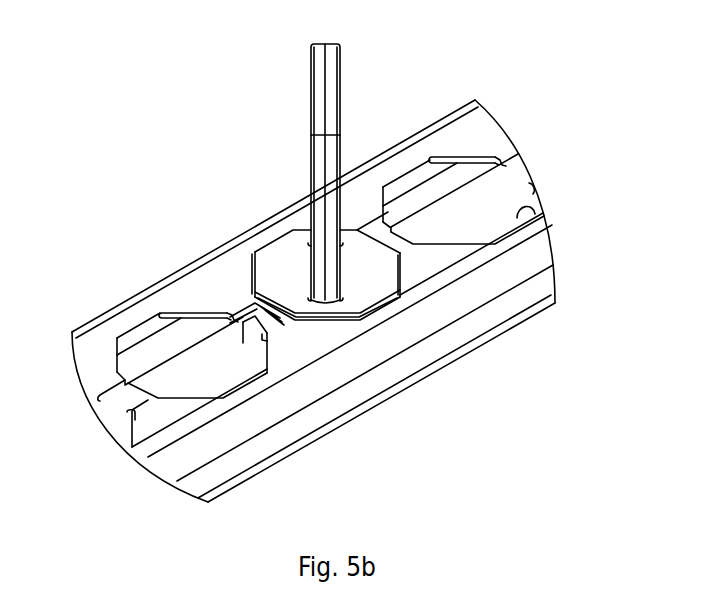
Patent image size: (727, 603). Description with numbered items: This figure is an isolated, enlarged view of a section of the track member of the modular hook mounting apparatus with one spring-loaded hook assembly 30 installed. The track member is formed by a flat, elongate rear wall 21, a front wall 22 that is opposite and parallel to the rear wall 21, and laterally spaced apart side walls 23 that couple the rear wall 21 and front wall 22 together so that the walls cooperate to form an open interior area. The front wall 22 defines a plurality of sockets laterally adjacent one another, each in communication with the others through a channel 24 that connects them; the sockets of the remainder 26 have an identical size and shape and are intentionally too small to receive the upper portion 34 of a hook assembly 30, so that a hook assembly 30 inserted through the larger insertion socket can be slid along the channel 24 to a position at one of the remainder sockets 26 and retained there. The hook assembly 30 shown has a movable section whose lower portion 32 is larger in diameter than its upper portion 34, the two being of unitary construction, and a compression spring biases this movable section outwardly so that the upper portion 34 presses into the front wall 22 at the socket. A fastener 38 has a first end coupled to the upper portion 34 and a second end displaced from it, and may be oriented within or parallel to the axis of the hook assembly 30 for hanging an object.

The rear wall 21 is at (527, 320).
The front wall 22 is at (200, 292).
The side walls 23 is at (533, 257).
The channel 24 is at (172, 369).
The remainder of sockets 26 is at (461, 160).
The hook assembly 30 is at (295, 226).
The lower portion 32 is at (255, 335).
The upper portion 34 is at (367, 272).
The fastener 38 is at (341, 75).